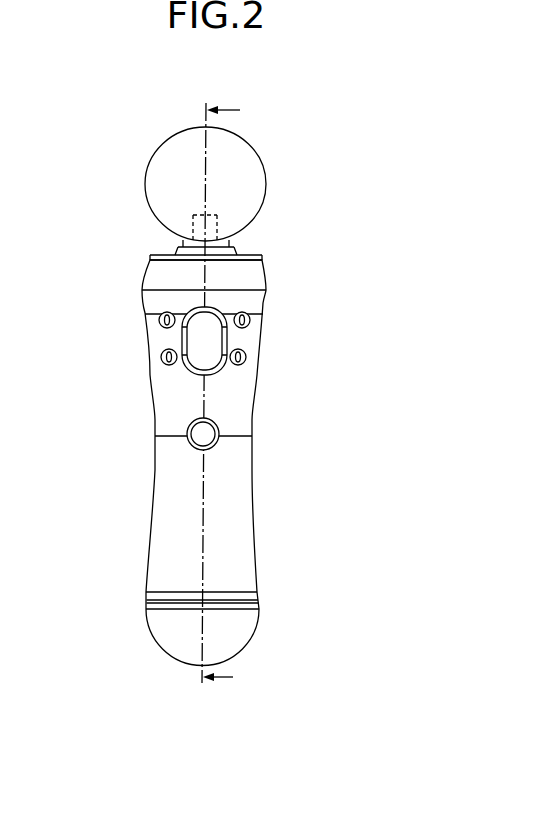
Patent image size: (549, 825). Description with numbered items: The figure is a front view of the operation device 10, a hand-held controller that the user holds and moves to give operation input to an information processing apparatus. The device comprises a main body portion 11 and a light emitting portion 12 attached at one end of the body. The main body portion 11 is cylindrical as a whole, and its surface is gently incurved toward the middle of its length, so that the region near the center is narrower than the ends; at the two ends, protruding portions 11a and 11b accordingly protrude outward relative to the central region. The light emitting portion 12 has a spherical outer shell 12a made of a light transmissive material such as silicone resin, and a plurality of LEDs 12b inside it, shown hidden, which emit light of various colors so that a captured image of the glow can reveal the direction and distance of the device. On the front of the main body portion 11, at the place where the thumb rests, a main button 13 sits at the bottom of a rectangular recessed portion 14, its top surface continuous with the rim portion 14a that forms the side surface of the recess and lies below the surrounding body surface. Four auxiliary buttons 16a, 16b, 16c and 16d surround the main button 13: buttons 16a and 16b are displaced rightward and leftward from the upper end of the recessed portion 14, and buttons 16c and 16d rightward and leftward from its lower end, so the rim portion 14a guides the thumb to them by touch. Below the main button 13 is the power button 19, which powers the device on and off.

The operation device 10 is at (131, 668).
The main body portion 11 is at (242, 460).
The protruding portion 11a is at (261, 268).
The protruding portion 11b is at (259, 618).
The light emitting portion 12 is at (235, 191).
The outer shell 12a is at (266, 180).
The LED 12b is at (193, 215).
The main button 13 is at (217, 340).
The recessed portion 14 is at (193, 336).
The rim portion 14a is at (193, 375).
The auxiliary button 16a is at (246, 312).
The auxiliary button 16b is at (163, 312).
The auxiliary button 16c is at (246, 363).
The auxiliary button 16d is at (162, 362).
The power button 19 is at (213, 428).